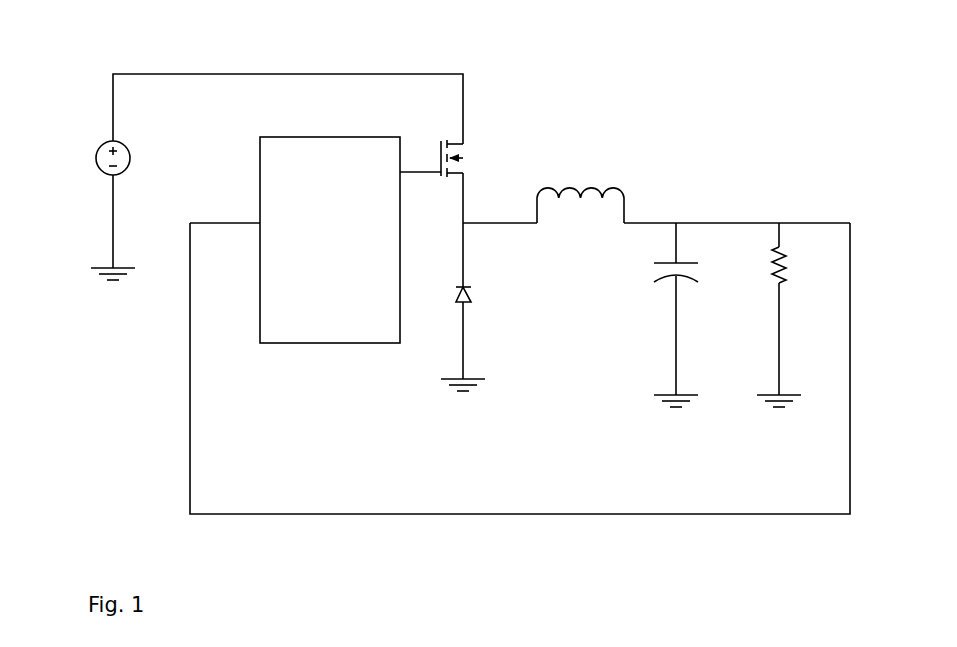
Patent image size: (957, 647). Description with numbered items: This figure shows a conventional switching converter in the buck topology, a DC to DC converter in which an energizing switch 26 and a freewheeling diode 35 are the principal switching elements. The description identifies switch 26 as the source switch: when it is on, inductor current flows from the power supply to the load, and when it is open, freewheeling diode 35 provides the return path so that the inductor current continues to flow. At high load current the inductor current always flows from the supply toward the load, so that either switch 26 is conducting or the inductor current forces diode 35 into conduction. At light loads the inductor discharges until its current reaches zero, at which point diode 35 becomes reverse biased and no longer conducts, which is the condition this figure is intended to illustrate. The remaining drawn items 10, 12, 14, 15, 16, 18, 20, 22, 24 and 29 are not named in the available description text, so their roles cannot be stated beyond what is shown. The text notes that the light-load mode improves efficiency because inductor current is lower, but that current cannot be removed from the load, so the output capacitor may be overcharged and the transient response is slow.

The buck converter 10 is at (678, 72).
The inductor 12 is at (617, 192).
The switch node 14 is at (513, 225).
The output node 15 is at (688, 220).
The output capacitor 16 is at (651, 295).
The ground 18 is at (455, 396).
The input supply line 20 is at (488, 79).
The voltage supply 22 is at (93, 145).
The load resistor 24 is at (765, 281).
The energizing switch 26 is at (443, 138).
The controller 29 is at (315, 240).
The freewheeling diode 35 is at (457, 297).